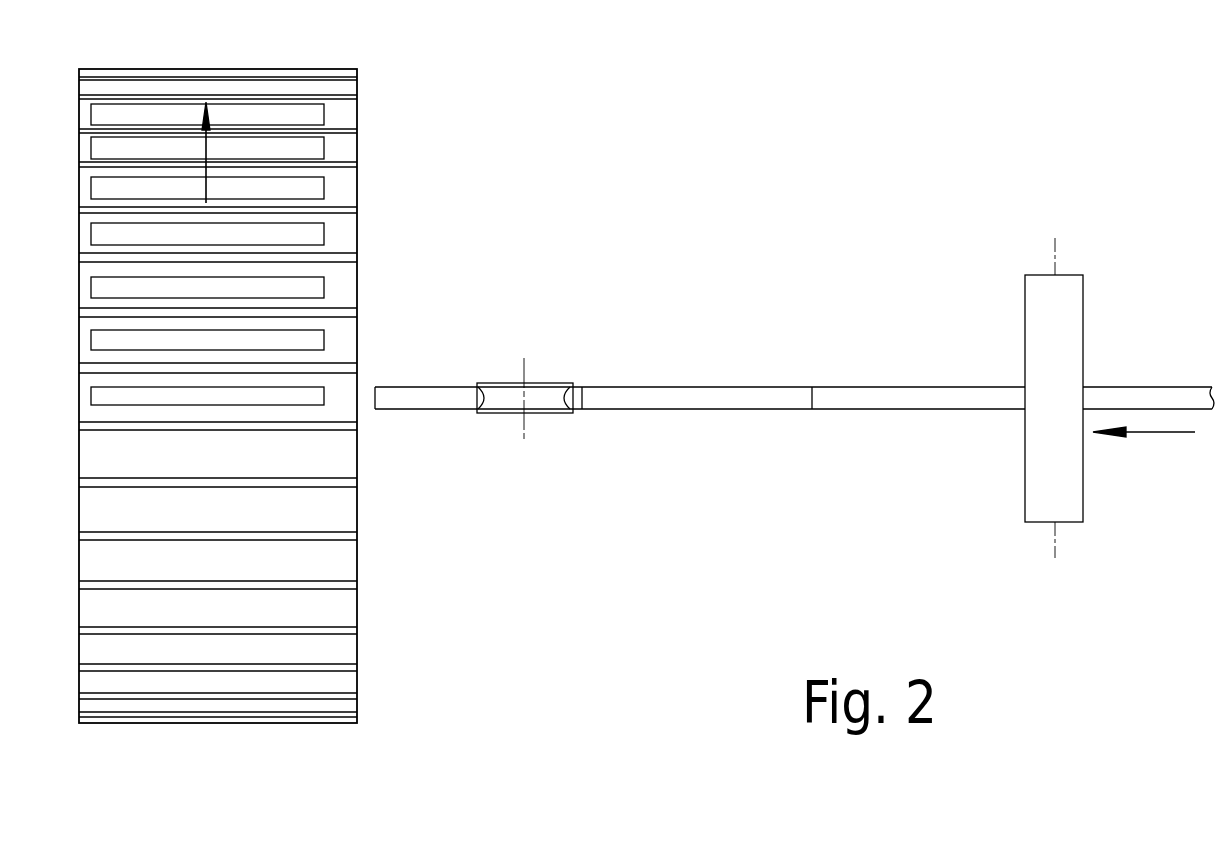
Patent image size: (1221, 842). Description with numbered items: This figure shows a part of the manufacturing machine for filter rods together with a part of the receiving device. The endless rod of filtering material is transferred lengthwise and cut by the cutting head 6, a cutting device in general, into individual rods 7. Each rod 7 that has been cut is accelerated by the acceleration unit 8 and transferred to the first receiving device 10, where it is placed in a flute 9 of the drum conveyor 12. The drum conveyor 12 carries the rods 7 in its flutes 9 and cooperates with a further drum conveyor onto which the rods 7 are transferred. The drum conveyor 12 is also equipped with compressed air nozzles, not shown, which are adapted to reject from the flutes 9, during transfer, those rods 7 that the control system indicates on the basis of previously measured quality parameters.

The cutting head 6 is at (1072, 330).
The filter rod 7 is at (667, 400).
The acceleration unit 8 is at (553, 363).
The flute 9 is at (332, 445).
The first receiving device 10 is at (300, 396).
The drum conveyor 12 is at (358, 513).